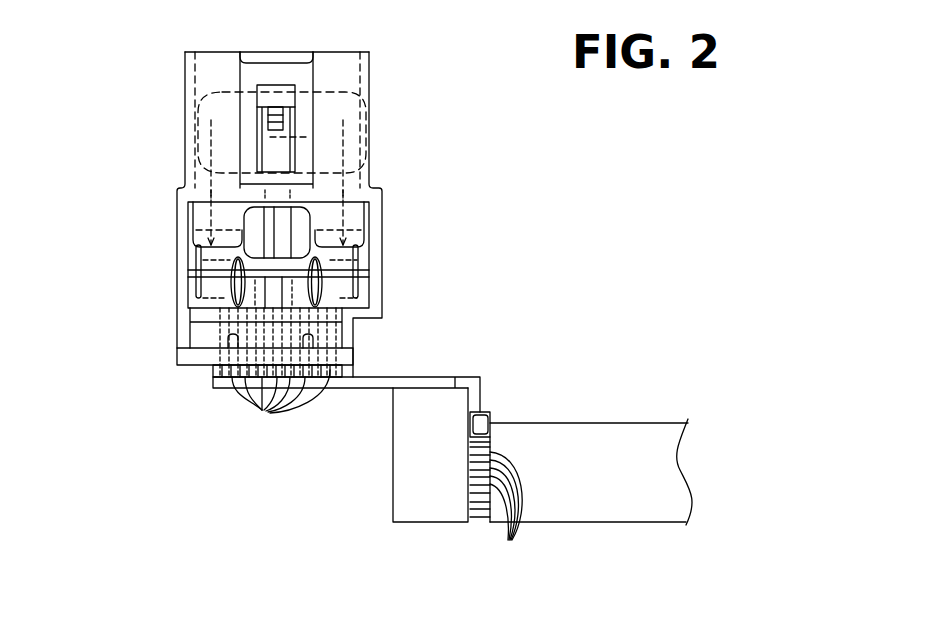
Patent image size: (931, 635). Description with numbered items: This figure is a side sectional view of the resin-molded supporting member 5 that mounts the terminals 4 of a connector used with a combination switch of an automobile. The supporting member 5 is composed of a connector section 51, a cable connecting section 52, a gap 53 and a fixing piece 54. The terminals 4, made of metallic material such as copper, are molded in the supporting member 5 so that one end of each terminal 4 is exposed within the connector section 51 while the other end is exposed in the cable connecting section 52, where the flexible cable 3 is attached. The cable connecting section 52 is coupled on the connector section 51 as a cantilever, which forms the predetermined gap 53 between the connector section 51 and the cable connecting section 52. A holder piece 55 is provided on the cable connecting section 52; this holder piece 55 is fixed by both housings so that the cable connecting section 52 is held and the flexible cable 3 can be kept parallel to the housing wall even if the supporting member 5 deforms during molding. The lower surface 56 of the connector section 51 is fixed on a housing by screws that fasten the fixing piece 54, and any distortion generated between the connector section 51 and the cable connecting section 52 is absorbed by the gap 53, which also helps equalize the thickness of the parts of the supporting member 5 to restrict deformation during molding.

The flexible cable 3 is at (577, 435).
The terminals 4 is at (370, 142).
The supporting member 5 is at (385, 225).
The connector section 51 is at (370, 66).
The cable connecting section 52 is at (373, 388).
The gap 53 is at (358, 370).
The fixing piece 54 is at (183, 353).
The holder piece 55 is at (335, 388).
The lower surface 56 is at (195, 366).